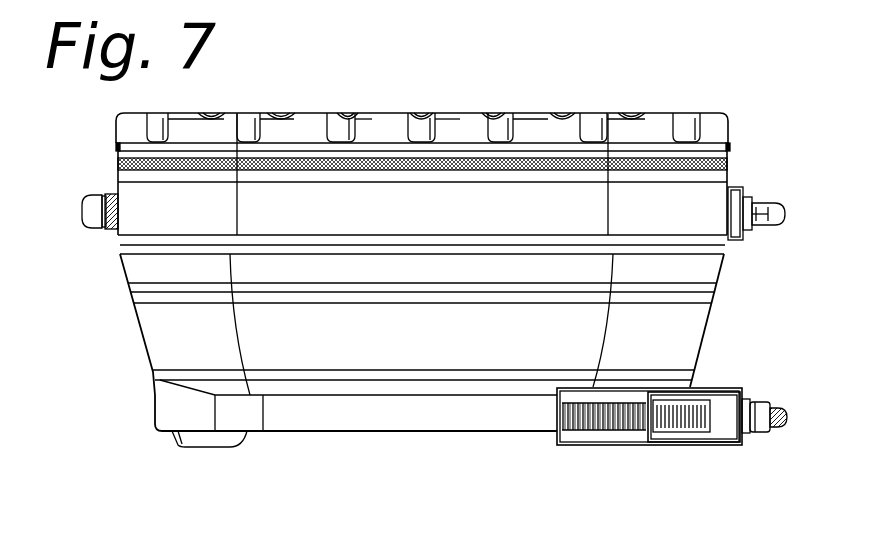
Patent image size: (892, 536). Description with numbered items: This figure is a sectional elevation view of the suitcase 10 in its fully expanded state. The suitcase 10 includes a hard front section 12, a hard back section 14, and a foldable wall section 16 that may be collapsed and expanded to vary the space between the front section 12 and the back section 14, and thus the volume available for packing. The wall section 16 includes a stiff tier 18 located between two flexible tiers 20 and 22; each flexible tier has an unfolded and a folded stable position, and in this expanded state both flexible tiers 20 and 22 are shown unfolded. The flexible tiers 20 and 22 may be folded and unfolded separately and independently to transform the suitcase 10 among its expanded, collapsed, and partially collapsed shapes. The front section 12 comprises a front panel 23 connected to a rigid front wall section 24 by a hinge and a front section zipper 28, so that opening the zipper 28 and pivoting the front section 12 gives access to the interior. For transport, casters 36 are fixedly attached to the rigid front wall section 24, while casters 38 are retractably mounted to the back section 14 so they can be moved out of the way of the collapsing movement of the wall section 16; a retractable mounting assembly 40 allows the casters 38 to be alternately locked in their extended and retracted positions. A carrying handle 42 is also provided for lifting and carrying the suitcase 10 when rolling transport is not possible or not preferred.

The suitcase 10 is at (508, 70).
The hard front section 12 is at (780, 112).
The hard back section 14 is at (392, 408).
The foldable wall section 16 is at (120, 256).
The stiff tier 18 is at (693, 288).
The flexible tier 20 is at (698, 262).
The flexible tier 22 is at (682, 342).
The front panel 23 is at (707, 125).
The rigid front wall section 24 is at (143, 205).
The front section zipper 28 is at (118, 163).
The caster 36 is at (780, 210).
The caster 38 is at (773, 420).
The retractable mounting assembly 40 is at (557, 450).
The carrying handle 42 is at (90, 210).